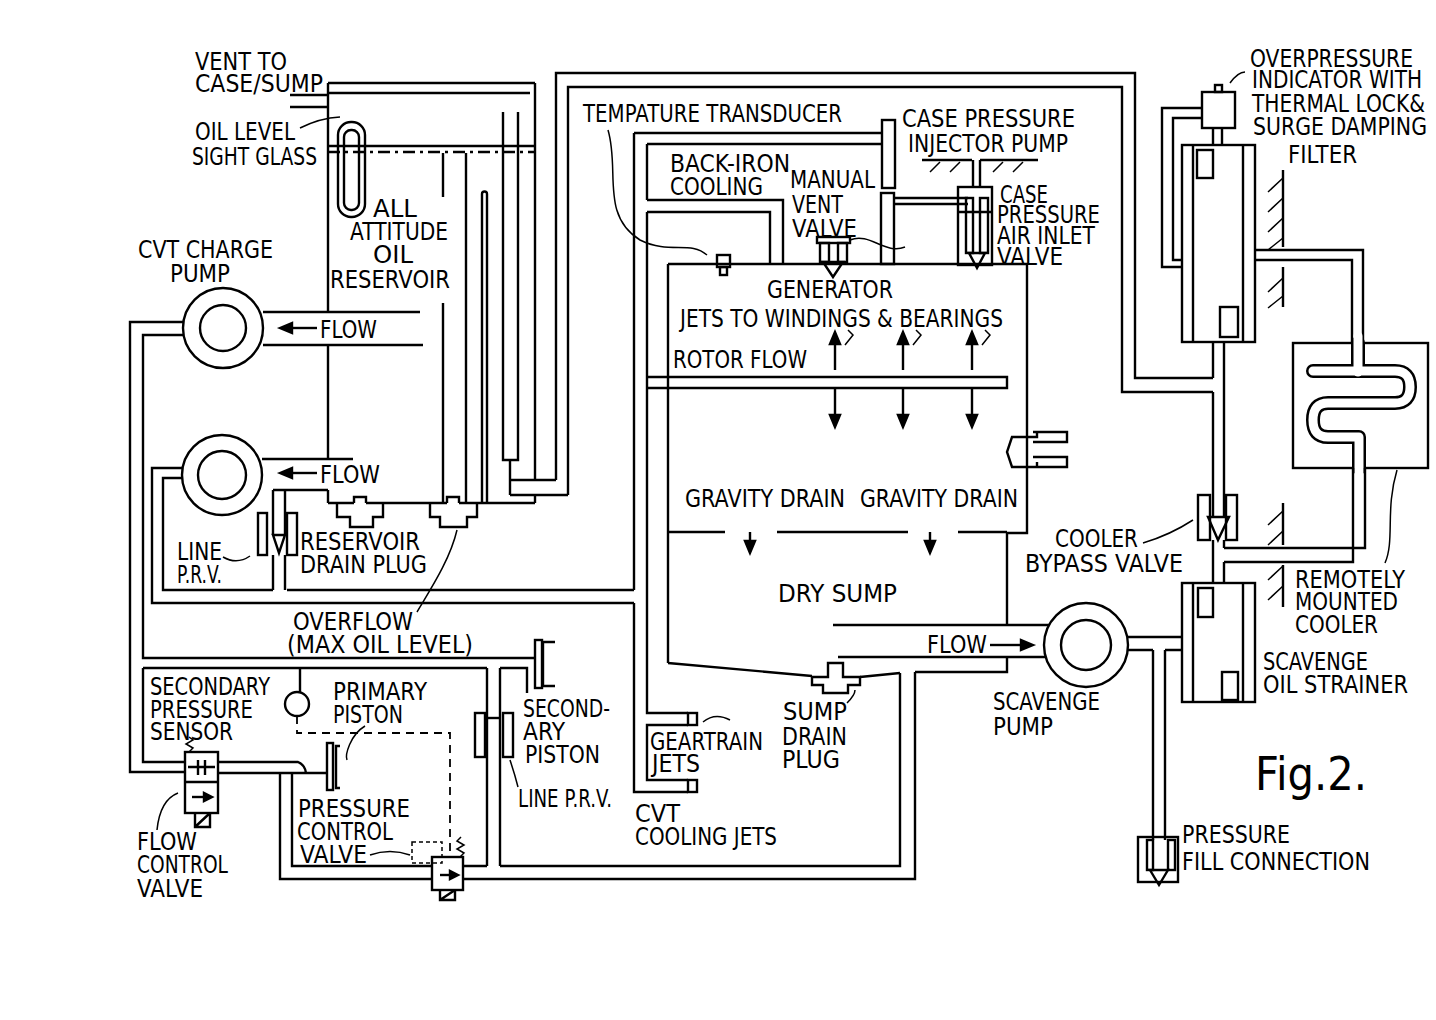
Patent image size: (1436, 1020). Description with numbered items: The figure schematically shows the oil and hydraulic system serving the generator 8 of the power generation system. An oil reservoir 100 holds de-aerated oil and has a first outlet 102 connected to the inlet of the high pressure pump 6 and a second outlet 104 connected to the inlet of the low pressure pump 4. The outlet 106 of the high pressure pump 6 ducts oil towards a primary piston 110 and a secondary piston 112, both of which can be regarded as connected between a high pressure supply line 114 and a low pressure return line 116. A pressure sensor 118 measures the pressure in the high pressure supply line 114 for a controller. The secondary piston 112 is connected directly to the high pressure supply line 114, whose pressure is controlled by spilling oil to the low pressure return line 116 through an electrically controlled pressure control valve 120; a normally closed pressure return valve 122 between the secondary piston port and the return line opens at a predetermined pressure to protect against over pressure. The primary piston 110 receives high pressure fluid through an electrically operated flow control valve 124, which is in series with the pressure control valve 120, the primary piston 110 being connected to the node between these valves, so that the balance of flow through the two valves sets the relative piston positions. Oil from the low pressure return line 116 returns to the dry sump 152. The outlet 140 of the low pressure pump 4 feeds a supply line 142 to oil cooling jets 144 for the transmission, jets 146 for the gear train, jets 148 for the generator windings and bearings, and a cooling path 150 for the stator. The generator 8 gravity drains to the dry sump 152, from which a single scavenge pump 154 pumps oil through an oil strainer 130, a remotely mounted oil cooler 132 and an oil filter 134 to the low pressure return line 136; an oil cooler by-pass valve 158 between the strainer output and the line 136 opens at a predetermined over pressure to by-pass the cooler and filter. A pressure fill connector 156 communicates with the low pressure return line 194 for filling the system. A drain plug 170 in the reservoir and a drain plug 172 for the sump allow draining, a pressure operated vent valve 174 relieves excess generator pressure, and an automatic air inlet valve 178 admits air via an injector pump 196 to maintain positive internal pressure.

The low pressure pump 4 is at (245, 437).
The high pressure pump 6 is at (190, 306).
The generator 8 is at (1030, 365).
The oil reservoir 100 is at (328, 195).
The first outlet 102 is at (268, 346).
The second outlet 104 is at (307, 458).
The outlet 106 is at (197, 359).
The primary piston 110 is at (347, 775).
The secondary piston 112 is at (550, 640).
The high pressure supply line 114 is at (143, 640).
The low pressure return line 116 is at (701, 883).
The pressure sensor 118 is at (287, 718).
The pressure control valve 120 is at (465, 890).
The pressure return valve 122 is at (473, 723).
The flow control valve 124 is at (218, 812).
The oil strainer 130 is at (1252, 705).
The remotely mounted oil cooler 132 is at (1293, 418).
The oil filter 134 is at (1257, 323).
The low pressure return line 136 is at (568, 347).
The outlet 140 is at (185, 452).
The supply line 142 is at (470, 593).
The oil cooling jets 144 is at (690, 795).
The jets 146 is at (688, 716).
The jets 148 is at (840, 393).
The cooling path 150 is at (698, 224).
The dry sump 152 is at (1003, 593).
The scavenge pump 154 is at (1113, 678).
The pressure fill connector 156 is at (1138, 873).
The oil cooler by-pass valve 158 is at (1237, 505).
The drain plug 170 is at (388, 510).
The drain plug 172 is at (823, 687).
The pressure operated vent valve 174 is at (1027, 420).
The automatic air inlet valve 178 is at (958, 258).
The low pressure return line 194 is at (1165, 800).
The injector pump 196 is at (888, 118).